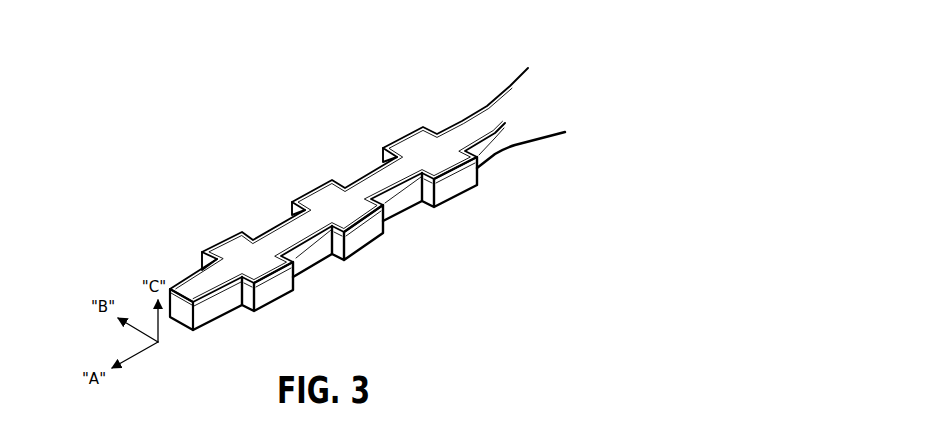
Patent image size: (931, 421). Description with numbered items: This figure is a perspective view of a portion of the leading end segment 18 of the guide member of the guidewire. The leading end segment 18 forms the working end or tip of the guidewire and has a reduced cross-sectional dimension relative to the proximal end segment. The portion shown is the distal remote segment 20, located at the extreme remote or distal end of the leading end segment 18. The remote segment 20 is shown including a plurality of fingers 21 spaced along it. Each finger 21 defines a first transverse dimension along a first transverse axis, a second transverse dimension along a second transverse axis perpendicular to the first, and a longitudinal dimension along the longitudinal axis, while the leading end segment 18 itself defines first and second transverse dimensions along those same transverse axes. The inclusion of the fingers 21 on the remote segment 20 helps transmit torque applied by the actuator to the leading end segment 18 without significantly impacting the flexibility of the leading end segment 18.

The leading end segment 18 is at (506, 57).
The distal remote segment 20 is at (412, 103).
The fingers 21 is at (273, 292).